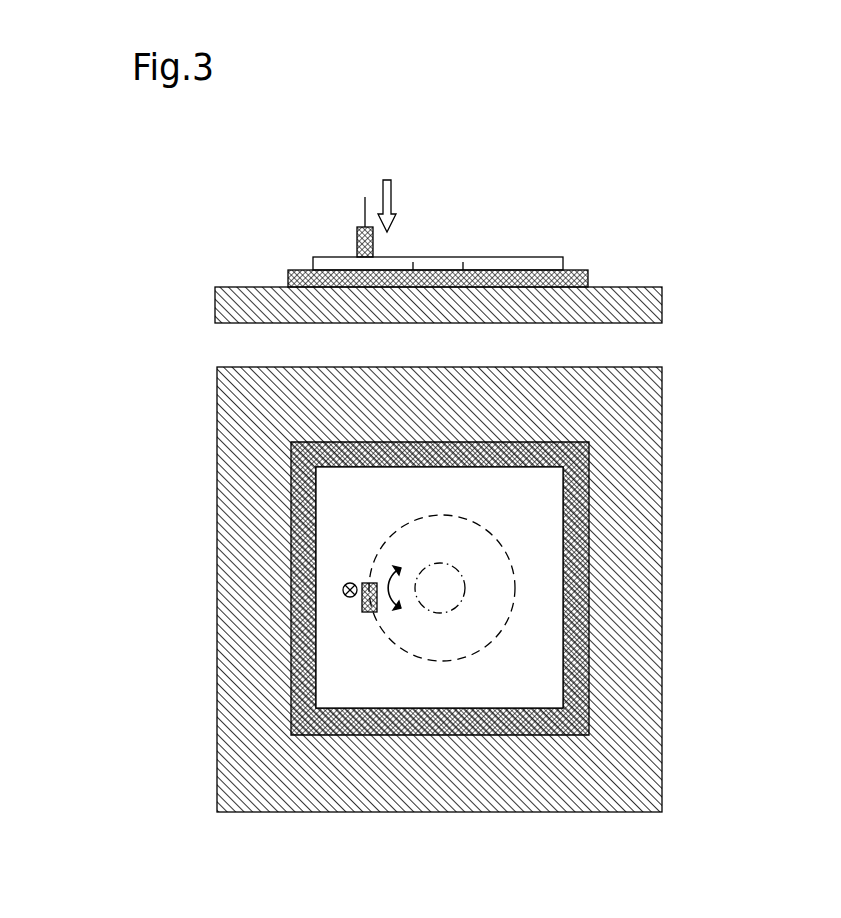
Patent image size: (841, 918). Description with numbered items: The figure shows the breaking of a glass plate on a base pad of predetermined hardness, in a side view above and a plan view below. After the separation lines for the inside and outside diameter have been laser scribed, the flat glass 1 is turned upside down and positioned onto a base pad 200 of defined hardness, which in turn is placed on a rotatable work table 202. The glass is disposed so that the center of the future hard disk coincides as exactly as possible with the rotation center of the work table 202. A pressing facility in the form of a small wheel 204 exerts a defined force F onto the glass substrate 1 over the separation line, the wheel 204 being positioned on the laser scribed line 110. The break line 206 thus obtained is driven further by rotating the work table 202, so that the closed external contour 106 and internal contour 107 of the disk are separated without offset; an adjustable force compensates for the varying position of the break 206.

The flat glass 1 is at (548, 263).
The external contour 106 is at (513, 598).
The internal contour 107 is at (458, 605).
The laser scribed line 110 is at (365, 267).
The base pad 200 is at (590, 273).
The rotatable work table 202 is at (663, 300).
The small wheel 204 is at (360, 226).
The break line 206 is at (370, 583).